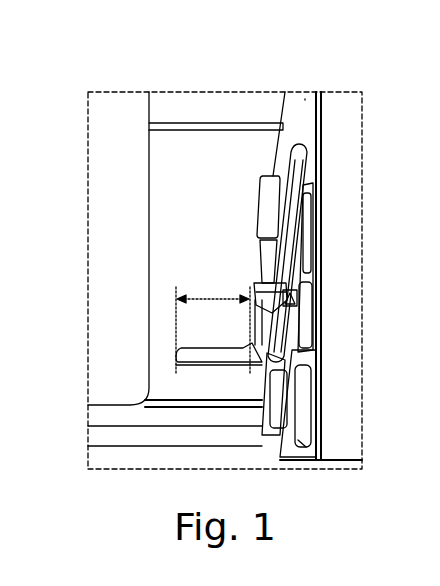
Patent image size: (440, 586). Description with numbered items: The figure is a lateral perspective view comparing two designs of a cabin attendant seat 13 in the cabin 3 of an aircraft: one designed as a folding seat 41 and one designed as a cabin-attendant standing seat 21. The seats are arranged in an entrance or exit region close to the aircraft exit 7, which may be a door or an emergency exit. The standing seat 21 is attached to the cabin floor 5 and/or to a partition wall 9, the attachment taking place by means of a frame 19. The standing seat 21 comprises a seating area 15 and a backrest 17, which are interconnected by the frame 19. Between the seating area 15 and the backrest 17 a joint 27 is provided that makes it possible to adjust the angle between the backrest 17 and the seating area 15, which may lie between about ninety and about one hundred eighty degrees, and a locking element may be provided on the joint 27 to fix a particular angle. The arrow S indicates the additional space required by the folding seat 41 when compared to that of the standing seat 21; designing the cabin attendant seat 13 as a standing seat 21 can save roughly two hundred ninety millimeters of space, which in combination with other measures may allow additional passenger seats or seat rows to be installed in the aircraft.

The cabin 3 is at (214, 104).
The cabin floor 5 is at (90, 447).
The aircraft exit 7 is at (114, 99).
The partition wall 9 is at (305, 99).
The cabin attendant seat 13 is at (316, 140).
The seating area 15 is at (298, 300).
The backrest 17 is at (300, 181).
The frame 19 is at (300, 337).
The standing seat 21 is at (322, 368).
The joint 27 is at (300, 280).
The folding seat 41 is at (213, 355).
The arrow s S is at (214, 297).